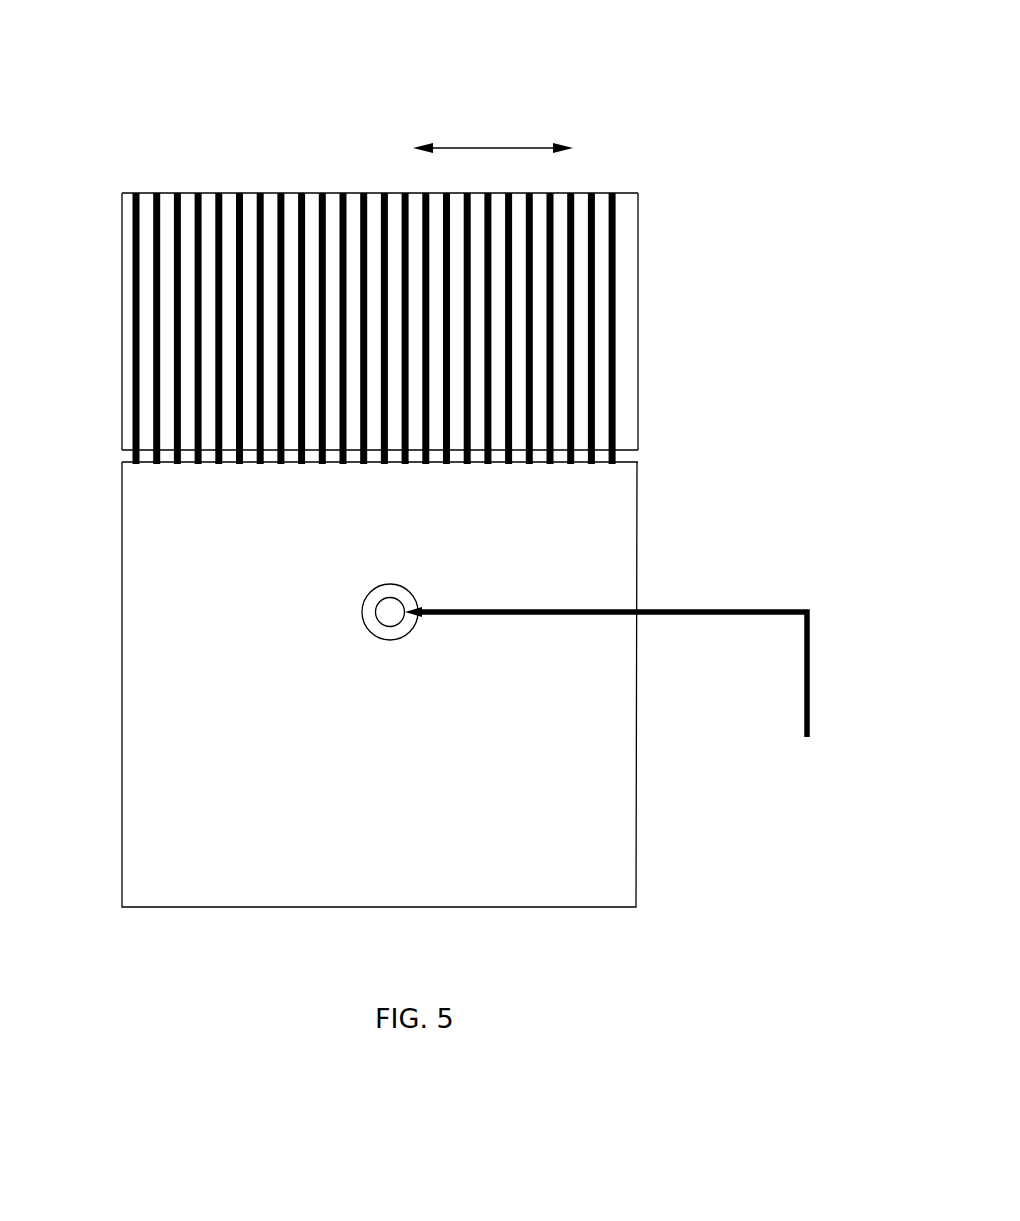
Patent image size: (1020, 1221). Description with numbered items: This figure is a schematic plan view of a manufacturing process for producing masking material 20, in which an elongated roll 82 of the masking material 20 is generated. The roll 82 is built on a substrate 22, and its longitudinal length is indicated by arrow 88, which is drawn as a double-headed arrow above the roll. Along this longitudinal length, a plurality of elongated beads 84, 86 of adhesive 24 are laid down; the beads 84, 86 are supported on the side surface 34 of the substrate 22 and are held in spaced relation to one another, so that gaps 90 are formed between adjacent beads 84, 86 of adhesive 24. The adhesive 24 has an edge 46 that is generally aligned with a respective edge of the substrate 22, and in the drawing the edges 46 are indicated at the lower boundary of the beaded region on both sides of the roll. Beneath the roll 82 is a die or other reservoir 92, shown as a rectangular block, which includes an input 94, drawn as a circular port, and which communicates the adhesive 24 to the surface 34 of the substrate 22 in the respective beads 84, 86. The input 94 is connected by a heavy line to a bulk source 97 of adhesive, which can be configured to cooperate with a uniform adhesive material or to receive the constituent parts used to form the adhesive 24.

The masking material 20 is at (762, 134).
The substrate 22 is at (630, 196).
The adhesive 24 is at (122, 263).
The side surface 34 is at (627, 383).
The edge 46 is at (122, 462).
The elongated roll 82 is at (707, 232).
The bead 84 is at (134, 193).
The bead 86 is at (158, 193).
The arrow 88 is at (497, 148).
The gap 90 is at (207, 213).
The die 92 is at (490, 520).
The input 94 is at (376, 612).
The bulk source 97 is at (808, 695).